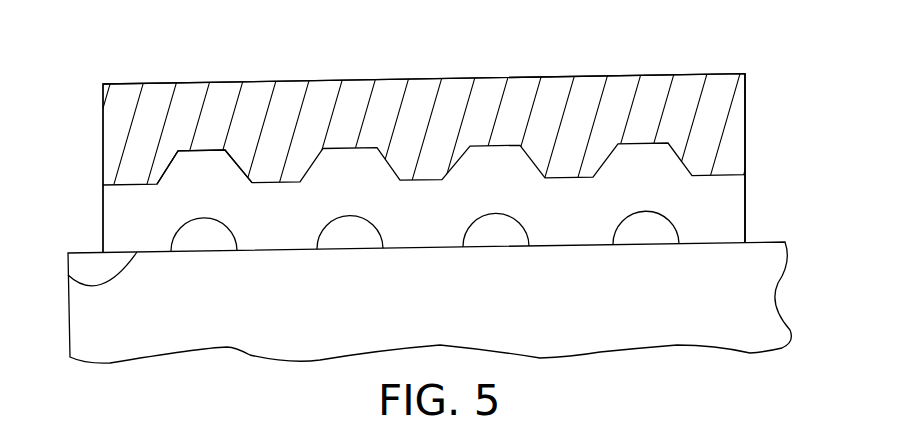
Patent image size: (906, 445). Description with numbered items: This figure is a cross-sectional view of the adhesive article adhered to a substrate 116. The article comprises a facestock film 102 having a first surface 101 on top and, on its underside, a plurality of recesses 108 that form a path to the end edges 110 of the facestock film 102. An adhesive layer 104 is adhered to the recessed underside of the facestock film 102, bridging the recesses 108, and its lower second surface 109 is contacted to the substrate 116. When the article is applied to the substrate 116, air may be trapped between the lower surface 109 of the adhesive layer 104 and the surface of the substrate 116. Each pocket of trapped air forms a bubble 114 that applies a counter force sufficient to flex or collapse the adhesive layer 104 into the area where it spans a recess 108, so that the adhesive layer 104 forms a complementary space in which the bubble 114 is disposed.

The first surface 101 is at (588, 78).
The facestock film 102 is at (707, 120).
The adhesive layer 104 is at (717, 212).
The recesses 108 is at (205, 172).
The second surface of the adhesive layer 109 is at (68, 275).
The end edges 110 is at (745, 97).
The bubble 114 is at (203, 238).
The substrate 116 is at (780, 297).